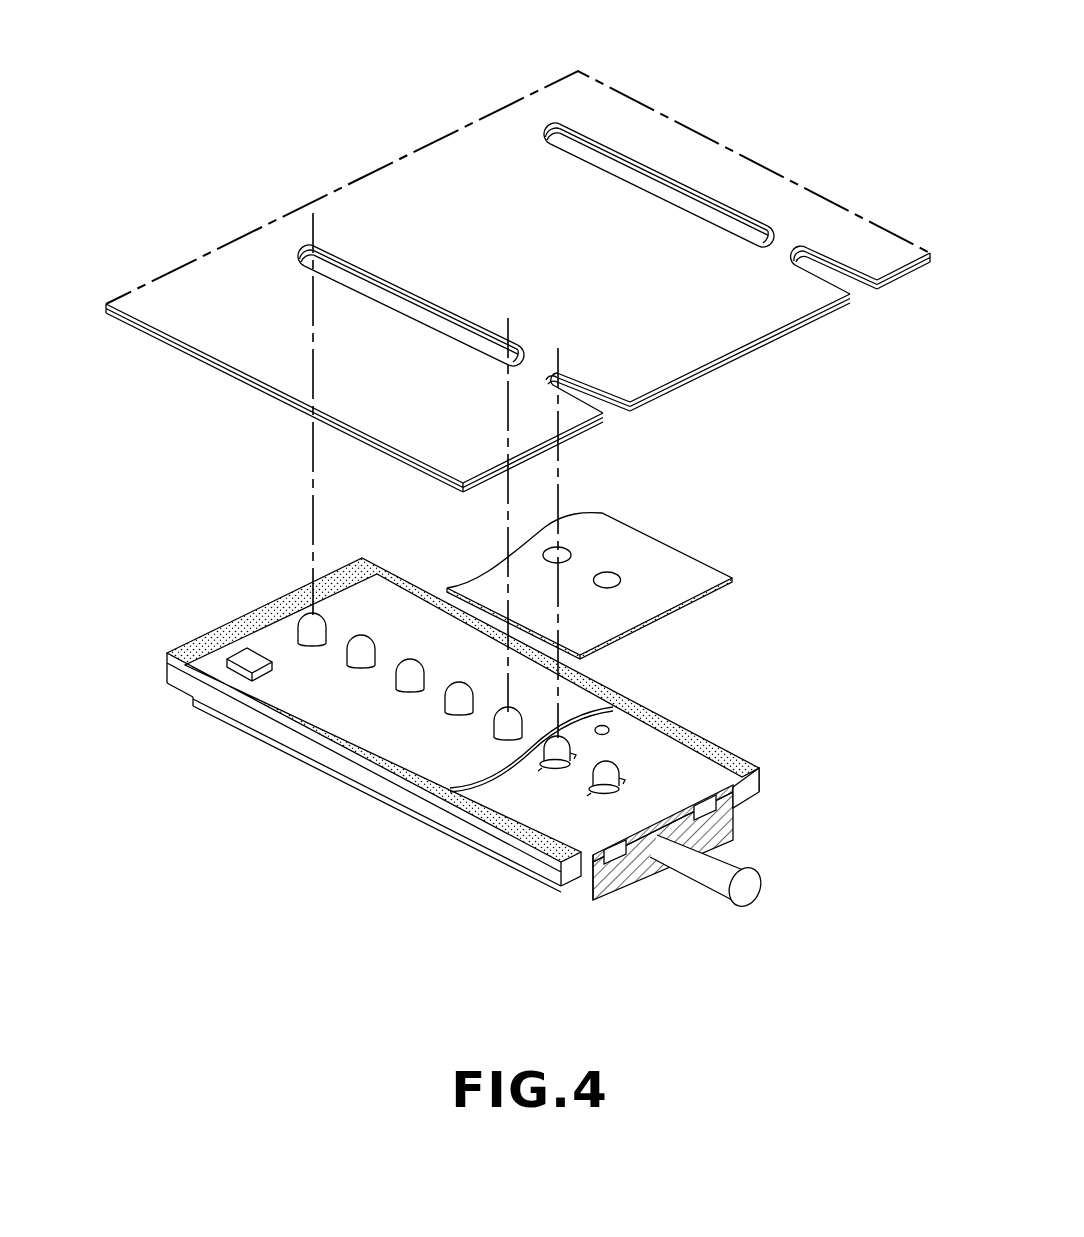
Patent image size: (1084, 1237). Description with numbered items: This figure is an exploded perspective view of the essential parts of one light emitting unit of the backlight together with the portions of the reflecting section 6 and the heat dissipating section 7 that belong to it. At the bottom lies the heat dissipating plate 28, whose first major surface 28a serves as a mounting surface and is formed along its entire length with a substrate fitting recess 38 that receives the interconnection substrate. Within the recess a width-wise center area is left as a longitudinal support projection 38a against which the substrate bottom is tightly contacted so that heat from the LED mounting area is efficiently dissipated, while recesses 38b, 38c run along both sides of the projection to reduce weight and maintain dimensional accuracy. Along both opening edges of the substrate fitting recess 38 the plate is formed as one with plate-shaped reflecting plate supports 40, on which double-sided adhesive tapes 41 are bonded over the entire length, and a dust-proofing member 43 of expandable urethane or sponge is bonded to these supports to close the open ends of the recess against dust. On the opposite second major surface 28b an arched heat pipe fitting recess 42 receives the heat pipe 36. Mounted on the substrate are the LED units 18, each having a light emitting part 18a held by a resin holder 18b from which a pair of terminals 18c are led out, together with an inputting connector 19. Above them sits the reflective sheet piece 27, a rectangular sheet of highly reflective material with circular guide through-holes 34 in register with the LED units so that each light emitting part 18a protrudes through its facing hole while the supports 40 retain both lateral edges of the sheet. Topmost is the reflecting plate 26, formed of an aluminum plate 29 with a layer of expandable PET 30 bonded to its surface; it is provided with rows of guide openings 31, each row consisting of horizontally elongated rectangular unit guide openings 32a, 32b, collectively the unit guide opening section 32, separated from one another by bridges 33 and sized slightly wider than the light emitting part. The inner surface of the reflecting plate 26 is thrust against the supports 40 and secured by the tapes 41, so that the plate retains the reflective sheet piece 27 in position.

The reflecting section 6 is at (518, 373).
The heat dissipating section 7 is at (504, 736).
The LED unit 18 is at (461, 754).
The light emitting part 18a is at (362, 645).
The resin holder 18b is at (600, 797).
The terminals 18c is at (545, 780).
The inputting connector 19 is at (243, 653).
The reflecting plate 26 is at (518, 286).
The reflective sheet piece 27 is at (618, 542).
The heat dissipating plate 28 is at (654, 837).
The first major surface 28a is at (668, 815).
The second major surface 28b is at (603, 887).
The plate 29 is at (260, 382).
The layer of expandable PET 30 is at (203, 337).
The guide openings 31 is at (587, 210).
The unit guide opening section 32 is at (414, 305).
The unit guide opening 32a is at (677, 198).
The unit guide opening 32b is at (803, 253).
The bridges 33 is at (521, 352).
The guide through-holes 34 is at (610, 573).
The heat pipe 36 is at (723, 868).
The substrate fitting recess 38 is at (708, 838).
The support projection 38a is at (707, 795).
The recess 38b is at (648, 873).
The recess 38c is at (740, 780).
The reflecting plate supports 40 is at (760, 773).
The double-sided adhesive tapes 41 is at (218, 697).
The heat pipe fitting recess 42 is at (657, 873).
The dust-proofing member 43 is at (193, 650).